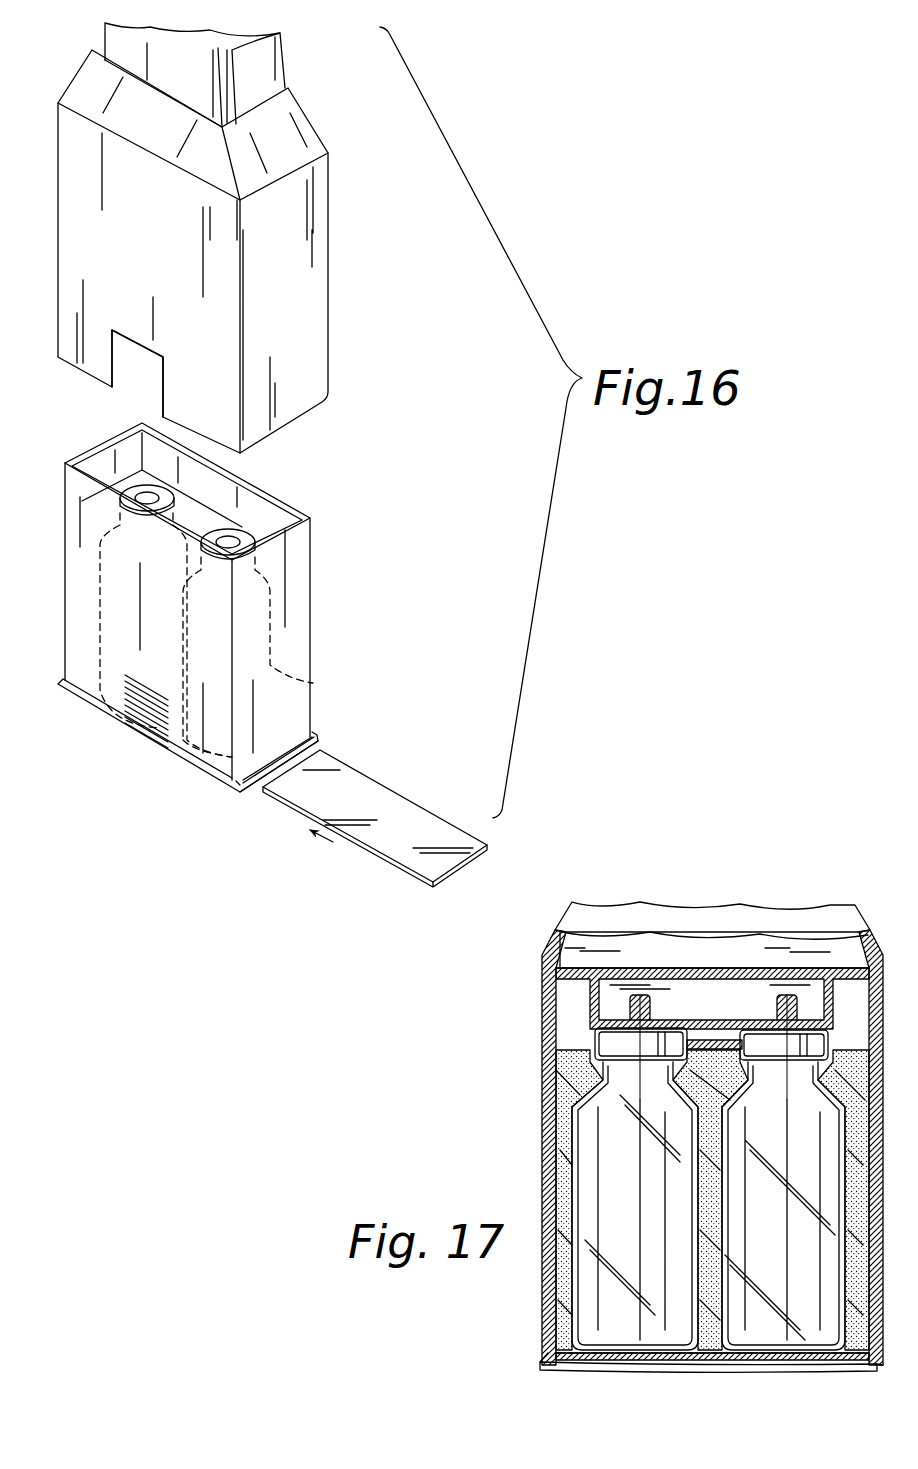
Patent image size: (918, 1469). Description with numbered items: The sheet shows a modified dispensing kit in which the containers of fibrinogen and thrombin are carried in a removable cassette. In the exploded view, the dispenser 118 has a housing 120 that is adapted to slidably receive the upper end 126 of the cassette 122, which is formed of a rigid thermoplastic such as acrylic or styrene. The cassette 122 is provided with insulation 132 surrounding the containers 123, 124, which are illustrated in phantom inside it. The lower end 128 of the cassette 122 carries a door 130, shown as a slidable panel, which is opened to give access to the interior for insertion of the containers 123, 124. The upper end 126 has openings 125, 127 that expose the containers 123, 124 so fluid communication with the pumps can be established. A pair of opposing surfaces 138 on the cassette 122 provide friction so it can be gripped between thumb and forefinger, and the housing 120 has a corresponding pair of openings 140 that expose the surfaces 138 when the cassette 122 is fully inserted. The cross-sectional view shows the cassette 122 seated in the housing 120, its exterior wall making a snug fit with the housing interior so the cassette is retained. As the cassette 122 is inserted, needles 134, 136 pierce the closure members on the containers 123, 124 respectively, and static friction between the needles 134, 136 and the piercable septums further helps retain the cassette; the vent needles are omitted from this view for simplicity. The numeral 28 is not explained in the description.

In FIG. 16, the dispenser 118 is at (257, 238).
In FIG. 16, the housing 120 is at (307, 358).
In FIG. 17, the housing 120 is at (605, 915).
In FIG. 16, the openings 140 is at (143, 370).
In FIG. 16, the cassette 122 is at (235, 628).
In FIG. 17, the cassette 122 is at (546, 1070).
In FIG. 16, the upper end 126 is at (310, 517).
In FIG. 17, the upper end 126 is at (712, 1008).
In FIG. 16, the container 123 is at (98, 665).
In FIG. 17, the container 123 is at (590, 1153).
In FIG. 16, the container 124 is at (300, 667).
In FIG. 17, the container 124 is at (760, 1327).
In FIG. 16, the opposing surfaces 138 is at (148, 725).
In FIG. 16, the lower end 128 is at (212, 765).
In FIG. 16, the door 130 is at (392, 800).
In FIG. 17, the door 130 is at (627, 1362).
In FIG. 17, the opening 125 is at (595, 1040).
In FIG. 17, the insulation 132 is at (703, 1050).
In FIG. 17, the opening 127 is at (752, 1038).
In FIG. 17, the needle 134 is at (637, 1240).
In FIG. 17, the needle 136 is at (783, 1258).
In FIG. 17, the base 28 is at (540, 1358).